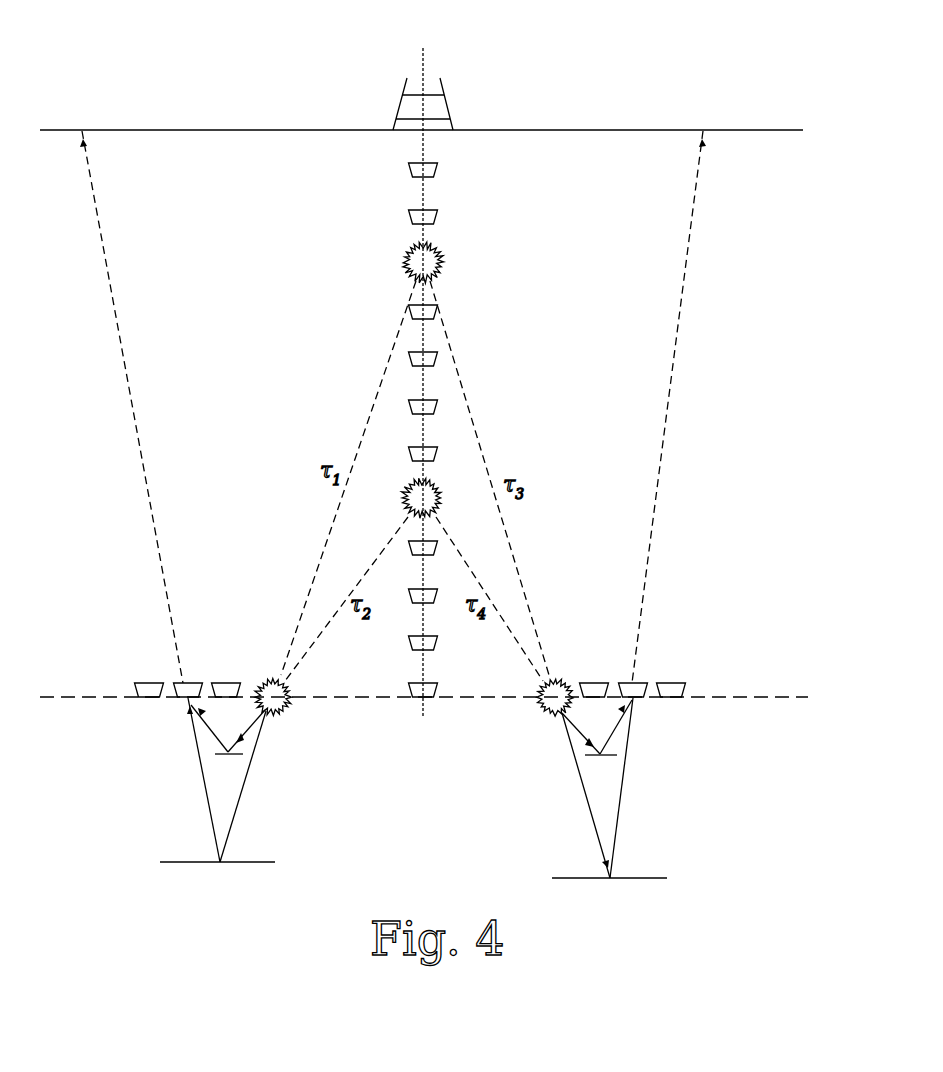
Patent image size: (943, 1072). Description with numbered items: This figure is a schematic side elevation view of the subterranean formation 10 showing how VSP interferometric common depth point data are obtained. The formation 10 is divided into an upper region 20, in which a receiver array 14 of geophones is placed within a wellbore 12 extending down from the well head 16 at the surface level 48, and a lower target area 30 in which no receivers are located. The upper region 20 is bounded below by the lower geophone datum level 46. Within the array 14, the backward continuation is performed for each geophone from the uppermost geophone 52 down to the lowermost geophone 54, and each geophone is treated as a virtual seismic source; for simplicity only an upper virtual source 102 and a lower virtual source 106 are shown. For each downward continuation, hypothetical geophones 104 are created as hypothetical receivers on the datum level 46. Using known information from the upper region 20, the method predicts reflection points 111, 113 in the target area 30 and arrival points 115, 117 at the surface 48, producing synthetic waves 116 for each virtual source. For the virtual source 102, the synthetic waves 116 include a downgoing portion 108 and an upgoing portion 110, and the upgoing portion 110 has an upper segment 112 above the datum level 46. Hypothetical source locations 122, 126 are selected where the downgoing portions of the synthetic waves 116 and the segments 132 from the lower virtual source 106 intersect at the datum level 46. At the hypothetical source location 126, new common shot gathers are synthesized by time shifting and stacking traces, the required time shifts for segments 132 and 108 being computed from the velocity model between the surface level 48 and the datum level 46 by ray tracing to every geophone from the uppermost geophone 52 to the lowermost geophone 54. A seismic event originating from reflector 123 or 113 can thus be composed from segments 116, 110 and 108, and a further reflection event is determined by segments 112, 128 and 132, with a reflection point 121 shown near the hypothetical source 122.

The subterranean formation 10 is at (768, 106).
The wellbore 12 is at (420, 148).
The receiver array 14 is at (442, 191).
The well head 16 is at (406, 95).
The upper region 20 is at (727, 467).
The target area 30 is at (412, 828).
The lower geophone datum level 46 is at (731, 697).
The surface level 48 is at (561, 130).
The uppermost geophone 52 is at (410, 172).
The lowermost geophone 54 is at (410, 684).
The upper virtual source 102 is at (446, 262).
The hypothetical geophones 104 is at (147, 682).
The lower virtual source 106 is at (405, 506).
The downgoing portion 108 is at (370, 412).
The upgoing portion 110 is at (201, 795).
The reflection point 111 is at (218, 867).
The upper segment 112 is at (134, 397).
The reflection point 113 is at (610, 880).
The arrival point 115 is at (82, 131).
The synthetic waves 116 is at (480, 421).
The arrival point 117 is at (703, 131).
The reflection point 121 is at (230, 758).
The hypothetical source location 122 is at (286, 710).
The reflector 123 is at (602, 760).
The hypothetical source location 126 is at (542, 710).
The segment 128 is at (214, 743).
The segment 132 is at (311, 643).